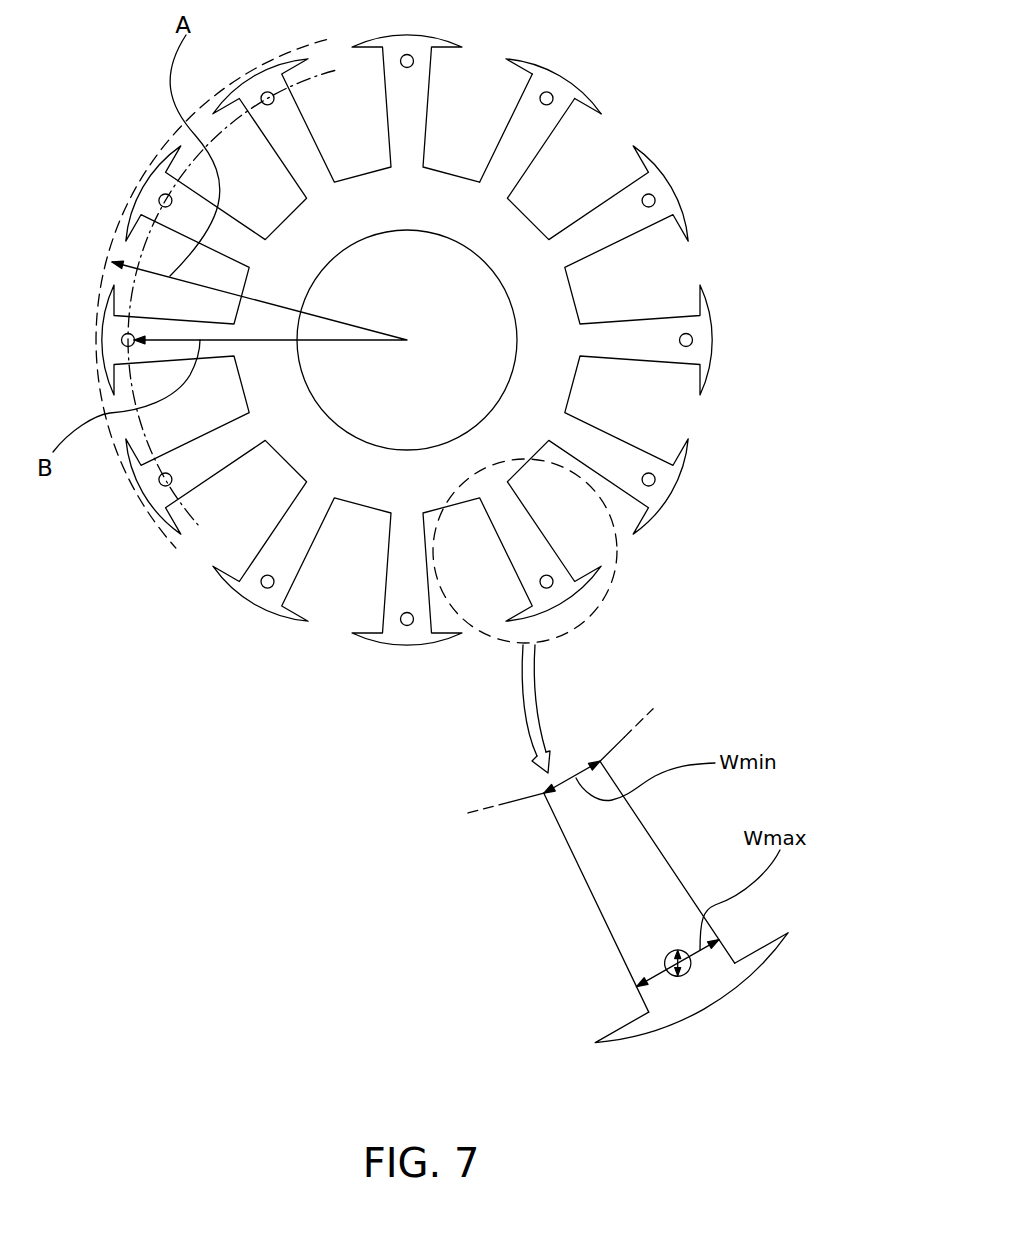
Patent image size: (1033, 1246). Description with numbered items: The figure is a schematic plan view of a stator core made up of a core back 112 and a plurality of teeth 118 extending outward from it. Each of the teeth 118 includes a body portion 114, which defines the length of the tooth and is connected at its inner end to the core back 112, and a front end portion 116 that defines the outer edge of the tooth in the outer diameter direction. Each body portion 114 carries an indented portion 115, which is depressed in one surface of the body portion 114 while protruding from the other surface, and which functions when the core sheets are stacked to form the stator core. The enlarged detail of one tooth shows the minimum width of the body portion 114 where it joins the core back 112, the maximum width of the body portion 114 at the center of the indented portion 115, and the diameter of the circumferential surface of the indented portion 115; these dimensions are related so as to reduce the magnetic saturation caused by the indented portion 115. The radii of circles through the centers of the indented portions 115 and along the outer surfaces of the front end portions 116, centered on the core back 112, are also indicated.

The core back 112 is at (543, 300).
The body portion 114 is at (533, 138).
The indented portion 115 is at (555, 94).
The front end portion 116 is at (537, 69).
The teeth 118 is at (763, 55).